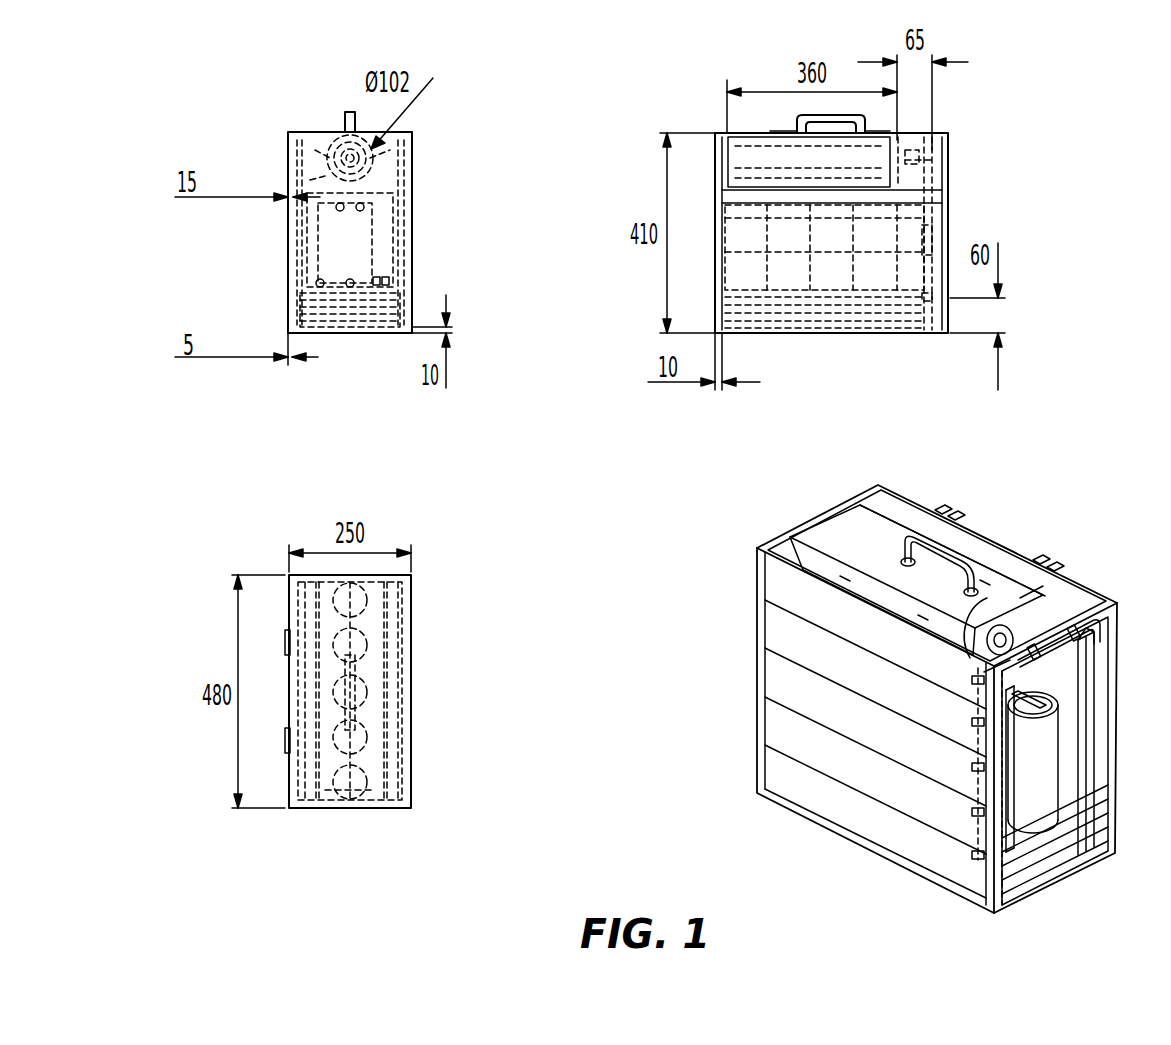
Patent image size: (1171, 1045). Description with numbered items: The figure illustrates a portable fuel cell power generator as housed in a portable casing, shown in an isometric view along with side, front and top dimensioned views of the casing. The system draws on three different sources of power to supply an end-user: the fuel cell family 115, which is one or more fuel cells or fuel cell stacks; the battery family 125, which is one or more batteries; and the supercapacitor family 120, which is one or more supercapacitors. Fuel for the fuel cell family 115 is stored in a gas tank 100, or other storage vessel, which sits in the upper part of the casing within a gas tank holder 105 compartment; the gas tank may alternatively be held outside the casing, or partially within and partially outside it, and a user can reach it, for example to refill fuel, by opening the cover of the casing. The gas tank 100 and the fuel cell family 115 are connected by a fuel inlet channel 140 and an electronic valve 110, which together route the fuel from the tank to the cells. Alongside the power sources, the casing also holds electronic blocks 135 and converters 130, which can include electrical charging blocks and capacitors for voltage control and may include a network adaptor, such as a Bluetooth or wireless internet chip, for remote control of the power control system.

The gas tank 100 is at (830, 537).
The gas tank holder 105 is at (1020, 597).
The electronic valve 110 is at (1033, 647).
The fuel cell family 115 is at (820, 645).
The supercapacitor family 120 is at (1040, 768).
The battery family 125 is at (1048, 857).
The converters 130 is at (1087, 728).
The electronic blocks 135 is at (1007, 822).
The fuel inlet channel 140 is at (1007, 673).